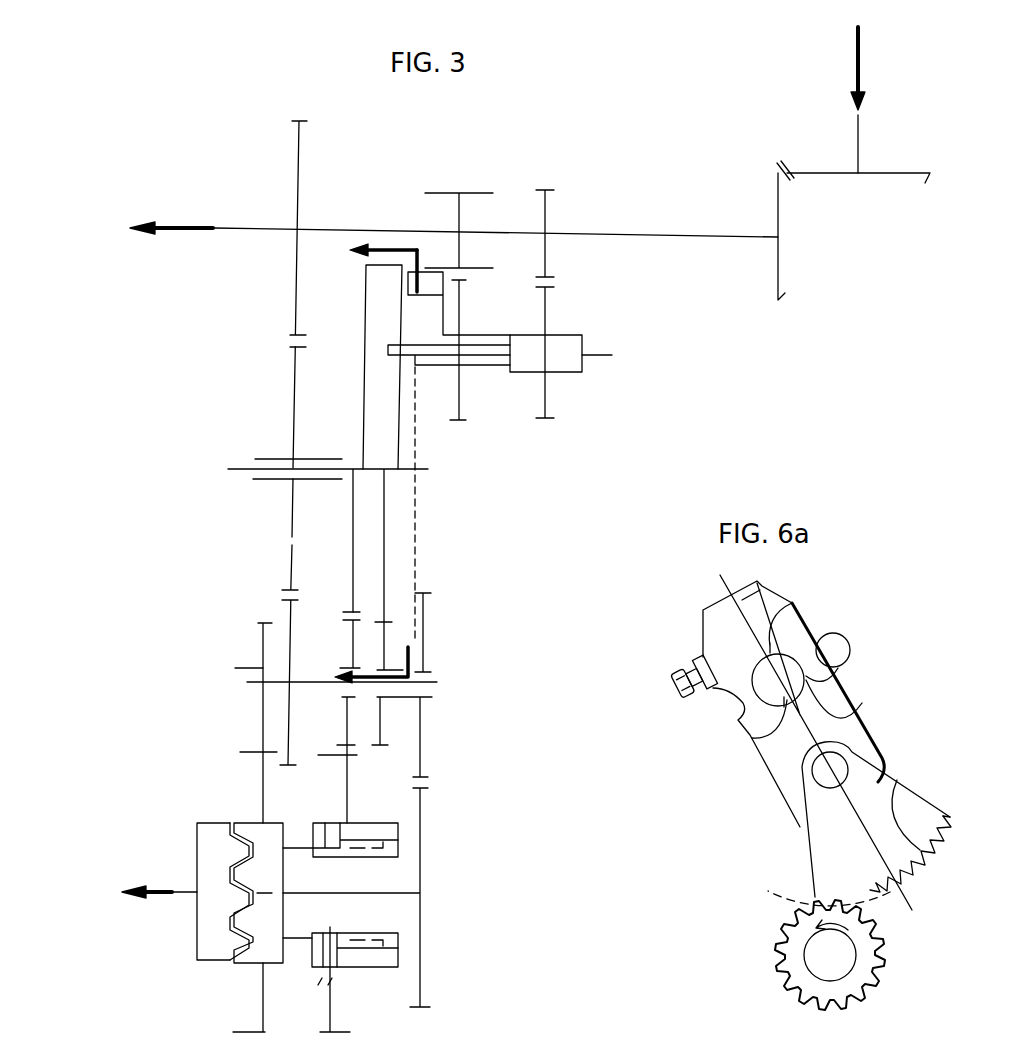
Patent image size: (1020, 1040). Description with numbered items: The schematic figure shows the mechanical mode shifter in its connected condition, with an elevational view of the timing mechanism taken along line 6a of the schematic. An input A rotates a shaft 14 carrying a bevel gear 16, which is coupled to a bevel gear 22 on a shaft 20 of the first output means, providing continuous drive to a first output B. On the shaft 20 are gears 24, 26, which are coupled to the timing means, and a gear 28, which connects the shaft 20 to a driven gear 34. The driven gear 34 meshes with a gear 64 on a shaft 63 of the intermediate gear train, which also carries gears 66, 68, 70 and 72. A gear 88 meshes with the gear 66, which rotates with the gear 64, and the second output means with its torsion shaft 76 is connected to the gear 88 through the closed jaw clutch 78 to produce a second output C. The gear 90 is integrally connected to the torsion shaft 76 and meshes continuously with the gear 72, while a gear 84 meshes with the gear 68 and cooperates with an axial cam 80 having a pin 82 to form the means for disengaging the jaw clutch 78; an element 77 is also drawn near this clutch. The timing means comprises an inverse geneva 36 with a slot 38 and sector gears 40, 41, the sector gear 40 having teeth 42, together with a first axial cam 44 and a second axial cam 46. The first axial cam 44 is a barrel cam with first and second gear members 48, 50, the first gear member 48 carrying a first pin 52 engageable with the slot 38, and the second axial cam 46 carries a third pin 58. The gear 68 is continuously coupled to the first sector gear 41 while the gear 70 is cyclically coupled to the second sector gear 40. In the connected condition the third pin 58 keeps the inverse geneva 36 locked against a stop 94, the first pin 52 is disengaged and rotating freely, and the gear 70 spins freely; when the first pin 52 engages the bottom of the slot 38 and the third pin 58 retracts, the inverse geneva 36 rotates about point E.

In FIG. 3, the shaft 14 is at (855, 150).
In FIG. 3, the bevel gear 16 is at (885, 173).
In FIG. 3, the shaft 20 is at (660, 237).
In FIG. 3, the bevel gear 22 is at (780, 277).
In FIG. 3, the gear 24 is at (548, 218).
In FIG. 3, the gear 26 is at (459, 213).
In FIG. 3, the gear 28 is at (297, 167).
In FIG. 3, the driven gear 34 is at (293, 392).
In FIG. 3, the inverse geneva 36 is at (383, 325).
In FIG. 6A, the inverse geneva 36 is at (712, 637).
In FIG. 6A, the slot 38 is at (757, 583).
In FIG. 3, the second sector gear 40 is at (385, 490).
In FIG. 6A, the second sector gear 40 is at (900, 795).
In FIG. 3, the first sector gear 41 is at (353, 535).
In FIG. 6A, the teeth 42 is at (902, 893).
In FIG. 3, the first axial cam 44 is at (609, 359).
In FIG. 3, the second axial cam 46 is at (568, 362).
In FIG. 3, the first gear member 48 is at (460, 316).
In FIG. 3, the second gear member 50 is at (548, 302).
In FIG. 3, the first pin 52 is at (413, 290).
In FIG. 6A, the first pin 52 is at (760, 758).
In FIG. 3, the third pin 58 is at (487, 352).
In FIG. 6A, the third pin 58 is at (843, 647).
In FIG. 3, the shaft 63 is at (437, 682).
In FIG. 3, the gear 64 is at (283, 600).
In FIG. 3, the gear 66 is at (243, 668).
In FIG. 3, the gear 68 is at (262, 640).
In FIG. 3, the gear 70 is at (383, 647).
In FIG. 6A, the gear 70 is at (875, 975).
In FIG. 3, the gear 72 is at (423, 617).
In FIG. 3, the torsion shaft 76 is at (395, 897).
In FIG. 3, the pin 77 is at (324, 986).
In FIG. 3, the jaw clutch 78 is at (212, 955).
In FIG. 3, the axial cam 80 is at (383, 960).
In FIG. 3, the pin 82 is at (312, 960).
In FIG. 3, the gear 84 is at (347, 797).
In FIG. 3, the gear 88 is at (262, 782).
In FIG. 3, the gear 90 is at (420, 866).
In FIG. 6A, the stop 94 is at (717, 690).
In FIG. 3, the input A is at (862, 65).
In FIG. 3, the first output B is at (190, 236).
In FIG. 3, the second output C is at (166, 903).
In FIG. 6A, the point E is at (830, 770).
In FIG. 3, the line 6a is at (352, 250).